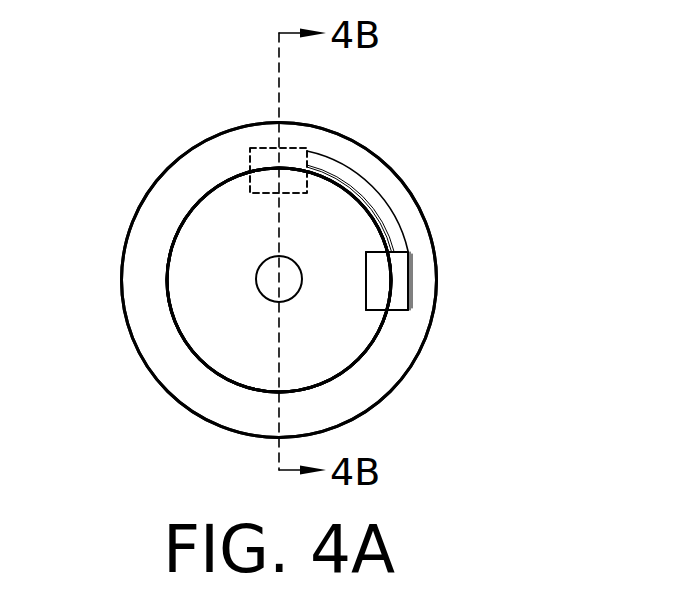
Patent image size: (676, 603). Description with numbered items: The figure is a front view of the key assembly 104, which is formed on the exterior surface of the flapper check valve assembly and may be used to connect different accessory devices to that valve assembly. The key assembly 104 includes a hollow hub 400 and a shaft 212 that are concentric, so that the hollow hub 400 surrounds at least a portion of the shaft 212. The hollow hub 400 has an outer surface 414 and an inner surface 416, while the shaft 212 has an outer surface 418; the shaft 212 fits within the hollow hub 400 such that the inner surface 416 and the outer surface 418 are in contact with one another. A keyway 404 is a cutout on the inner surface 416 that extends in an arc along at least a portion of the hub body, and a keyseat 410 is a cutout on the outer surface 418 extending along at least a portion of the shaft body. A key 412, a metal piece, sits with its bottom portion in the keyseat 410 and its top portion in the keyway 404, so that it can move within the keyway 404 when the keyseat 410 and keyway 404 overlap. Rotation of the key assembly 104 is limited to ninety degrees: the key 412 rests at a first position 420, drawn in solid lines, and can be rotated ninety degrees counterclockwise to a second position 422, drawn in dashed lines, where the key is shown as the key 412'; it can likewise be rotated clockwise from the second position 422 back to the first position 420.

The key assembly 104 is at (146, 117).
The shaft 212 is at (196, 319).
The hollow hub 400 is at (136, 265).
The keyway 404 is at (398, 240).
The keyseat 410 is at (366, 273).
The key 412 is at (457, 281).
The alternate sensor element position 412' is at (294, 130).
The outer surface 414 is at (152, 184).
The inner surface 416 is at (198, 362).
The outer surface 418 is at (306, 390).
The first position 420 is at (413, 308).
The second position 422 is at (270, 148).